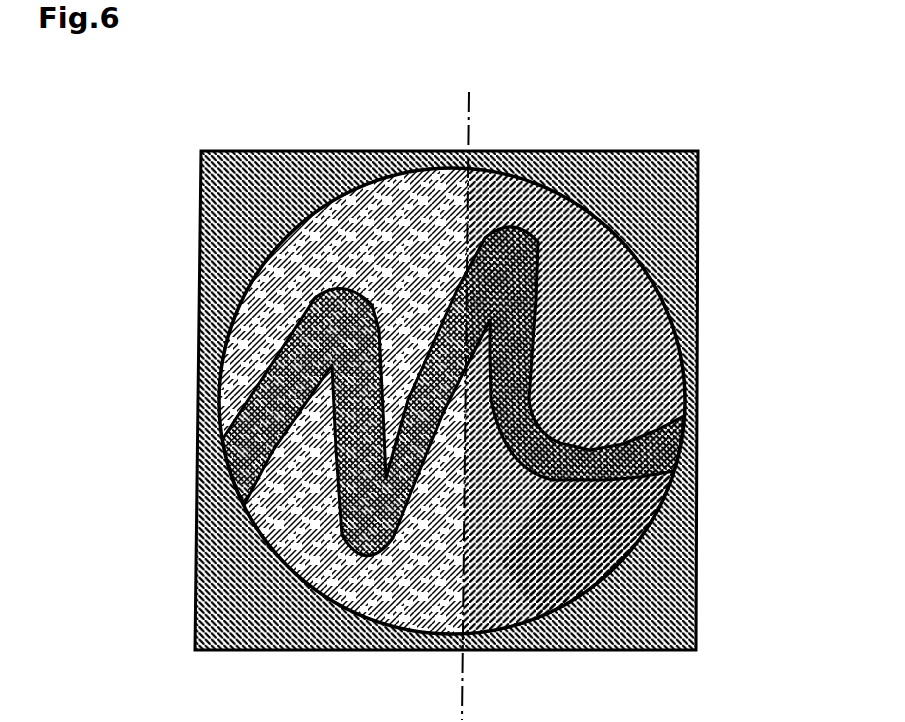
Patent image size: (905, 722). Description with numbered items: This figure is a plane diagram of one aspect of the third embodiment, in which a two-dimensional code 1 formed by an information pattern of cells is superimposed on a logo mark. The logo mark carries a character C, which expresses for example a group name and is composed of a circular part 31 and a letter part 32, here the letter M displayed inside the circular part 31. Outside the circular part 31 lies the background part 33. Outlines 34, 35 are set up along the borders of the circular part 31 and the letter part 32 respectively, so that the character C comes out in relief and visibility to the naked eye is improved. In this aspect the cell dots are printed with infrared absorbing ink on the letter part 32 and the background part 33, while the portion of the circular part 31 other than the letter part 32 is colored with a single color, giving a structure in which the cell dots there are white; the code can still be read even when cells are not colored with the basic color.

The two-dimensional code 1 is at (353, 240).
The circular part 31 is at (637, 353).
The letter part 32 is at (690, 448).
The background part 33 is at (698, 284).
The outline 34 is at (576, 205).
The outline 35 is at (536, 224).
The character C is at (644, 405).